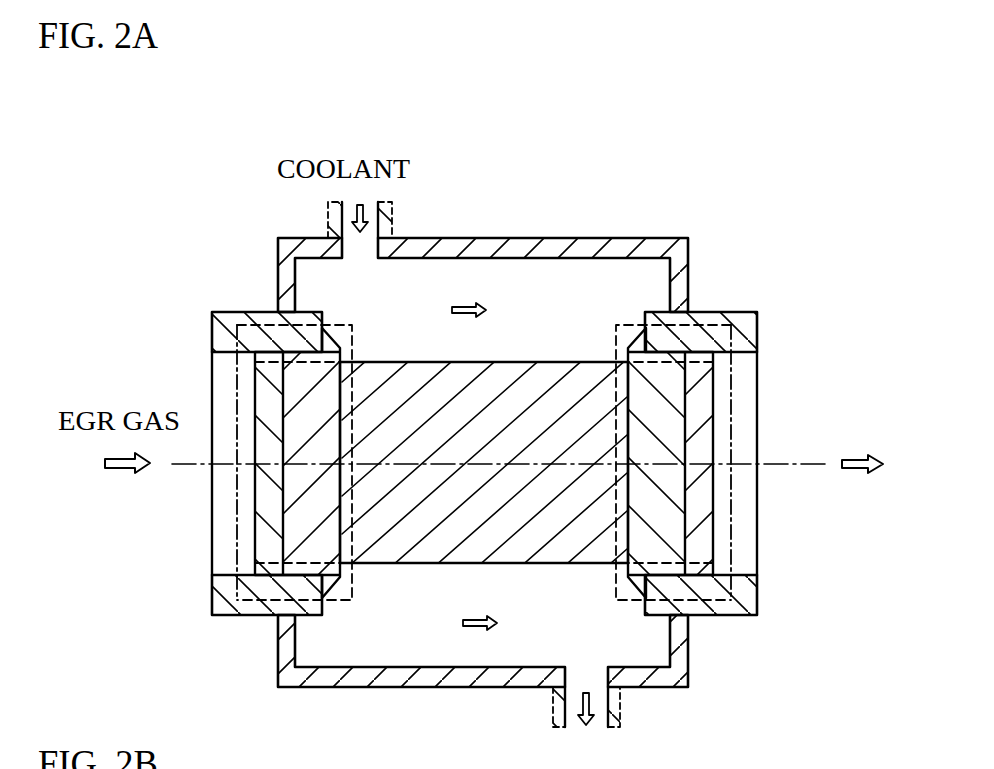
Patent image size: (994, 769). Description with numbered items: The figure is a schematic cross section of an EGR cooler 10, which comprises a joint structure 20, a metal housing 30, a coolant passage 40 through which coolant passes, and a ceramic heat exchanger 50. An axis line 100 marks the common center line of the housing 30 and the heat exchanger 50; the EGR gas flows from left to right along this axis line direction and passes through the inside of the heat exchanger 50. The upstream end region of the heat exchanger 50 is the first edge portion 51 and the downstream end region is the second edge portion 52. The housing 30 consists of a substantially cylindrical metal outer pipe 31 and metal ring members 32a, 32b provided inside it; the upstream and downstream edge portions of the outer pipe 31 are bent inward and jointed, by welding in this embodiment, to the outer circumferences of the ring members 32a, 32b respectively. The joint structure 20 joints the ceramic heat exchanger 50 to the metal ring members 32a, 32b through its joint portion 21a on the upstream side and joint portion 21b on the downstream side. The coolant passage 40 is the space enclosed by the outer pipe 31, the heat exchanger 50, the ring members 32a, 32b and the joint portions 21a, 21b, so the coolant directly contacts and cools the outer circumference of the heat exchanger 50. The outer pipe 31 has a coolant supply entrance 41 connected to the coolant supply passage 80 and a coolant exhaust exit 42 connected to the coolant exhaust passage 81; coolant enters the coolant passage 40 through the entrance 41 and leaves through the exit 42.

The EGR cooler 10 is at (148, 188).
The joint structure 20 is at (138, 570).
The joint portion 21a is at (224, 513).
The joint portion 21b is at (734, 505).
The housing 30 is at (717, 238).
The outer pipe 31 is at (597, 238).
The ring member 32a is at (238, 312).
The ring member 32b is at (713, 312).
The coolant passage 40 is at (470, 278).
The coolant supply entrance 41 is at (367, 247).
The coolant exhaust exit 42 is at (575, 667).
The heat exchanger 50 is at (413, 563).
The first edge portion 51 is at (245, 488).
The second edge portion 52 is at (718, 478).
The coolant supply passage 80 is at (393, 210).
The coolant exhaust passage 81 is at (623, 705).
The axis line 100 is at (790, 462).